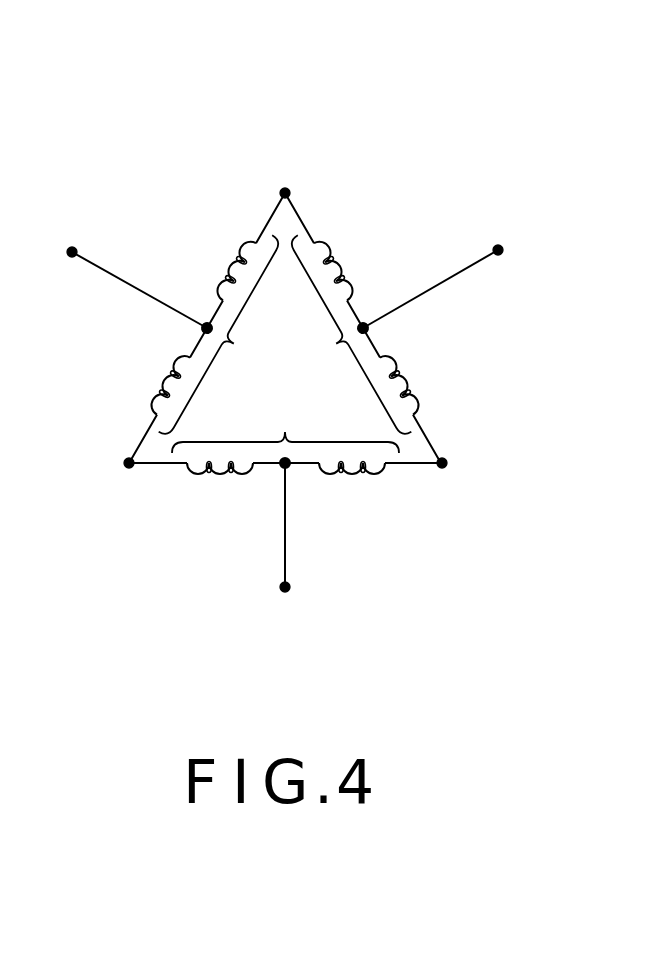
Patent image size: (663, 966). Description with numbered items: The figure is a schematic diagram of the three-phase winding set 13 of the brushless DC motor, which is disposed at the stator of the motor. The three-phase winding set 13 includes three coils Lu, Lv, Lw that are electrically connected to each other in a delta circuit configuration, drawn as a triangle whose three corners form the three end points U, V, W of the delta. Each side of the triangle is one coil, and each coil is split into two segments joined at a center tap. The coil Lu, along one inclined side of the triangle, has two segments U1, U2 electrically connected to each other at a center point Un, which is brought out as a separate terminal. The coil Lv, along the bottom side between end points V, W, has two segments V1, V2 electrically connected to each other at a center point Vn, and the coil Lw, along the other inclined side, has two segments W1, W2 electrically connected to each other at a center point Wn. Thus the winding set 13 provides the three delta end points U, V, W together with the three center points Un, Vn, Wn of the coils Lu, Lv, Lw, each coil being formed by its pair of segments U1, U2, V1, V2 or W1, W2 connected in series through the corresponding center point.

The three-phase winding set 13 is at (143, 138).
The segment U1 is at (218, 267).
The segment U2 is at (152, 380).
The segment V1 is at (220, 495).
The segment V2 is at (352, 495).
The segment W1 is at (421, 381).
The segment W2 is at (355, 268).
The coil Lu is at (225, 338).
The coil Lv is at (285, 426).
The coil Lw is at (346, 338).
The end point U is at (284, 174).
The end point V is at (116, 468).
The end point W is at (459, 468).
The center point Un is at (116, 276).
The center point Vn is at (306, 527).
The center point Wn is at (459, 277).